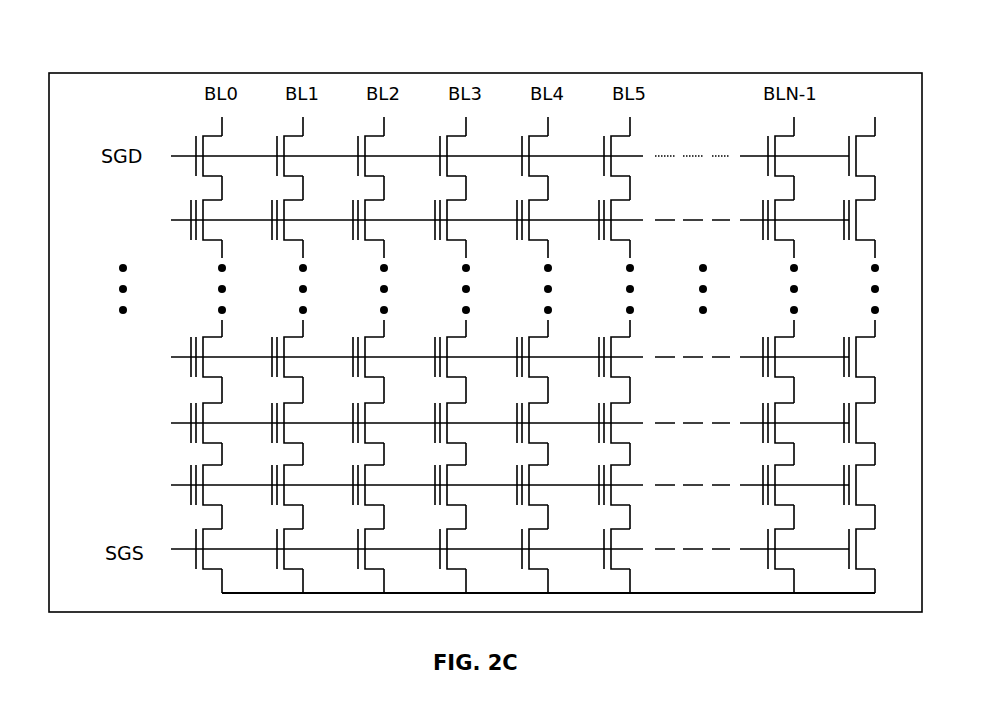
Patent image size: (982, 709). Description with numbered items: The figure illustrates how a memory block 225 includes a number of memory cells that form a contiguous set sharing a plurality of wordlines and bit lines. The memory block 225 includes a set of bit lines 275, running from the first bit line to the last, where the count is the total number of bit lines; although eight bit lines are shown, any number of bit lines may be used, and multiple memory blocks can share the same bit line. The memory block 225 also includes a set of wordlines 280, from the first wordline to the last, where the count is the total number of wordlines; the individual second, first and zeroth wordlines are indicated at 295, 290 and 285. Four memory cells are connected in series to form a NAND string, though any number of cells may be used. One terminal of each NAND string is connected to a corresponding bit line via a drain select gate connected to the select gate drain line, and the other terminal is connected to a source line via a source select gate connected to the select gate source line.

The memory block 225 is at (78, 73).
The bit lines 275 is at (874, 76).
The wordlines 280 is at (93, 226).
The word line WL2 295 is at (93, 363).
The word line WL1 290 is at (93, 423).
The word line WL0 285 is at (93, 491).